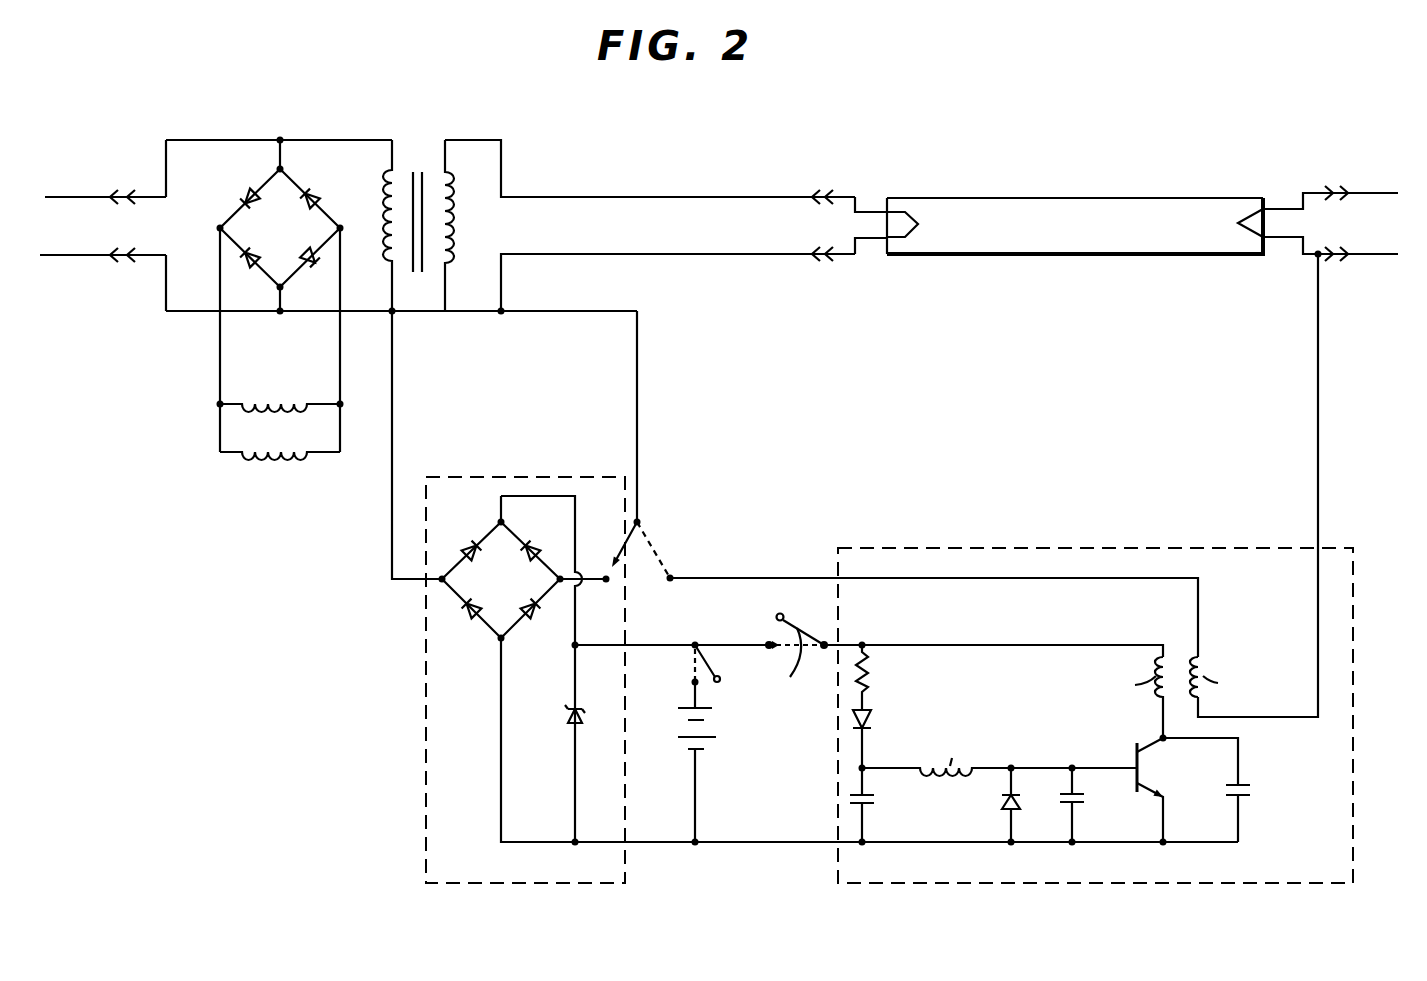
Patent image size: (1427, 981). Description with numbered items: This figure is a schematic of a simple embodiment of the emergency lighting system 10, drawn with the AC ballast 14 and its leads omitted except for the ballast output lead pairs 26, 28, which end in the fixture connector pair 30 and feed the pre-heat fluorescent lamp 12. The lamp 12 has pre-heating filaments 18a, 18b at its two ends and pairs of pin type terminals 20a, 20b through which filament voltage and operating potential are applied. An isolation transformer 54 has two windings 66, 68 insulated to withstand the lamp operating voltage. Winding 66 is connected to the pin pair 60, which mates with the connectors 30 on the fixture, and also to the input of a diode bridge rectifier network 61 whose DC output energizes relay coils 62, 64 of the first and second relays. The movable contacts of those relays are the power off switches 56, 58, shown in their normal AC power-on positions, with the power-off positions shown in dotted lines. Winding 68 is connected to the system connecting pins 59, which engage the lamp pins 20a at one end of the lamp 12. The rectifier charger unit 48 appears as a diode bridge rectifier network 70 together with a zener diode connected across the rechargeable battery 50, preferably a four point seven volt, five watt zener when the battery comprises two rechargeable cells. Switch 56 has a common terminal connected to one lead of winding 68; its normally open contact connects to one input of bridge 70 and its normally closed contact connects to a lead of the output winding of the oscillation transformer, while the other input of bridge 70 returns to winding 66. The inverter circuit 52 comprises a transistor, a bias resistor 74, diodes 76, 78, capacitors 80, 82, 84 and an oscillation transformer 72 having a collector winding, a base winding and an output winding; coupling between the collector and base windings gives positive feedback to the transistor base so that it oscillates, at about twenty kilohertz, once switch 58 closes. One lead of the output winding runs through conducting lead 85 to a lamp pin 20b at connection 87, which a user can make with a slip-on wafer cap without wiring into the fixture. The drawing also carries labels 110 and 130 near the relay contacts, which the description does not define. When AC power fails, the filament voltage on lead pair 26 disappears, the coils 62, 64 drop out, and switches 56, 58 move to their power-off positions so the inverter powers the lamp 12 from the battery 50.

The emergency lighting system 10 is at (405, 715).
The pre-heat fluorescent lamp 12 is at (1040, 198).
The AC ballast 14 is at (103, 300).
The pre-heating filament 18a is at (912, 232).
The pre-heating filament 18b is at (1245, 228).
The pin type terminals 20a is at (845, 210).
The pin type terminals 20b is at (1313, 208).
The output lead pair 26 is at (60, 206).
The output lead pair 28 is at (1386, 200).
The connector pair 30 is at (103, 222).
The rectifier charger unit 48 is at (592, 878).
The rechargeable battery 50 is at (690, 722).
The inverter circuit 52 is at (1303, 878).
The isolation transformer 54 is at (592, 208).
The power off switch 56 is at (640, 535).
The power off switch 58 is at (800, 660).
The connecting pins 59 is at (808, 258).
The pin pair 60 is at (140, 197).
The diode bridge rectifier network 61 is at (244, 297).
The relay coil 62 is at (262, 400).
The relay coil 64 is at (262, 450).
The winding 66 is at (388, 205).
The winding 68 is at (450, 226).
The diode bridge rectifier network 70 is at (460, 585).
The oscillation transformer 72 is at (1175, 670).
The bias resistor 74 is at (868, 672).
The diode 76 is at (875, 722).
The diode 78 is at (1018, 803).
The capacitor 80 is at (872, 800).
The capacitor 82 is at (1080, 800).
The capacitor 84 is at (1252, 790).
The conducting lead 85 is at (1322, 445).
The connection 87 is at (1315, 260).
The relay contact 110 is at (604, 564).
The switch 130 is at (672, 669).